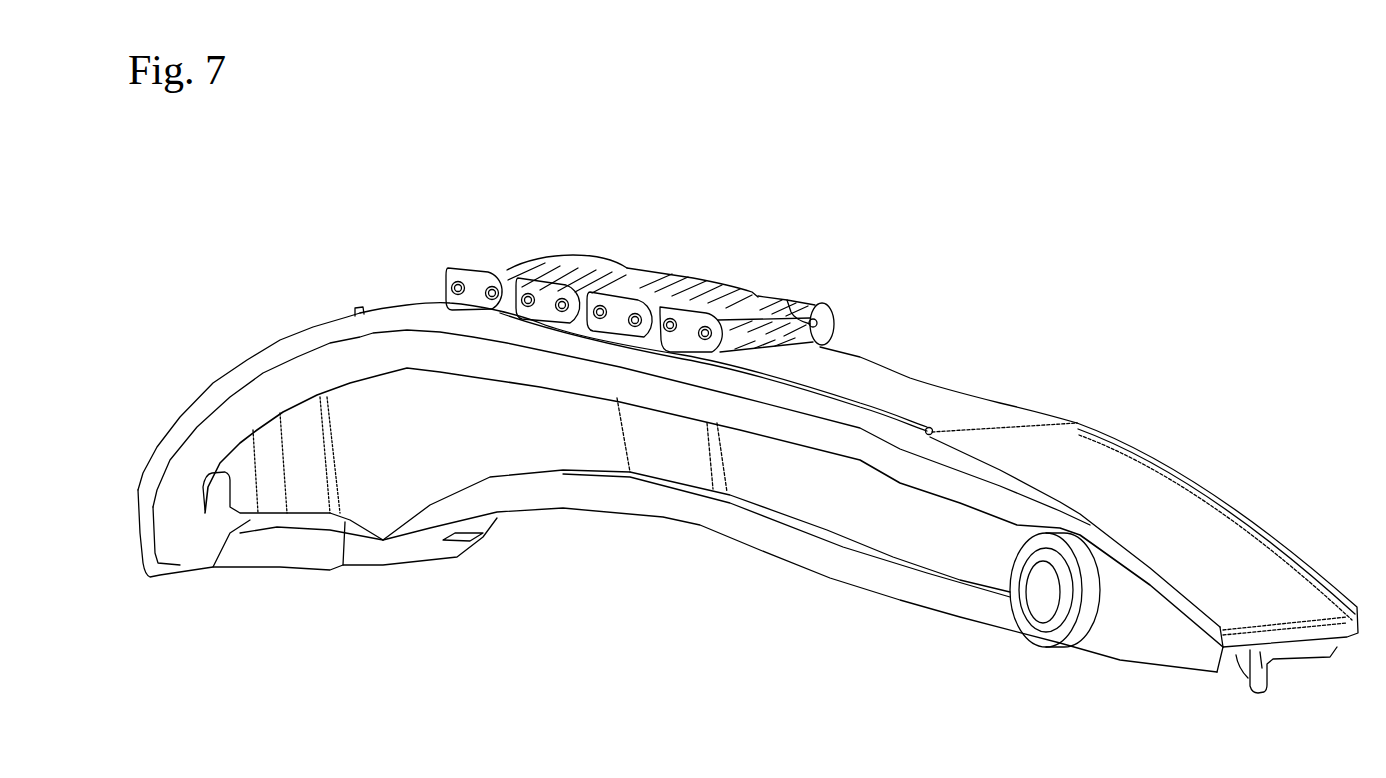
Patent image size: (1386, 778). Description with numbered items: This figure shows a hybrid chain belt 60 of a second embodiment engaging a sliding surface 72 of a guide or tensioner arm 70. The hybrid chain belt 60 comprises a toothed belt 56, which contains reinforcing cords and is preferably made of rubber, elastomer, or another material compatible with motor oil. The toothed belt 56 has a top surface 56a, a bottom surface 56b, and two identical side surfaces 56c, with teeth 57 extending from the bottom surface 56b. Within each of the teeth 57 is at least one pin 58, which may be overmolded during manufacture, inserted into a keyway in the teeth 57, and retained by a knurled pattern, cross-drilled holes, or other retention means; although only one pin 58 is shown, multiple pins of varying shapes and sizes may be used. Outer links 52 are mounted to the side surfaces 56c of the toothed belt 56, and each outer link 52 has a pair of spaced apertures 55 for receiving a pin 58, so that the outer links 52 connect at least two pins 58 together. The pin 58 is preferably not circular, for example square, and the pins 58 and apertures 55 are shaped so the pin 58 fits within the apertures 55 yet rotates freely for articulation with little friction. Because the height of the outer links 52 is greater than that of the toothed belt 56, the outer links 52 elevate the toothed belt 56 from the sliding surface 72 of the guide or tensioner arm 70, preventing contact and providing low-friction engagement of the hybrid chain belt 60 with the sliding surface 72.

The guide or tensioner arm 70 is at (397, 432).
The sliding surface 72 is at (910, 380).
The hybrid chain belt 60 is at (525, 255).
The toothed belt 56 is at (551, 263).
The top surface 56a is at (727, 290).
The bottom surface 56b is at (587, 325).
The side surfaces 56c is at (520, 308).
The pin 58 is at (632, 318).
The teeth 57 is at (760, 297).
The outer links 52 is at (800, 303).
The apertures 55 is at (812, 323).